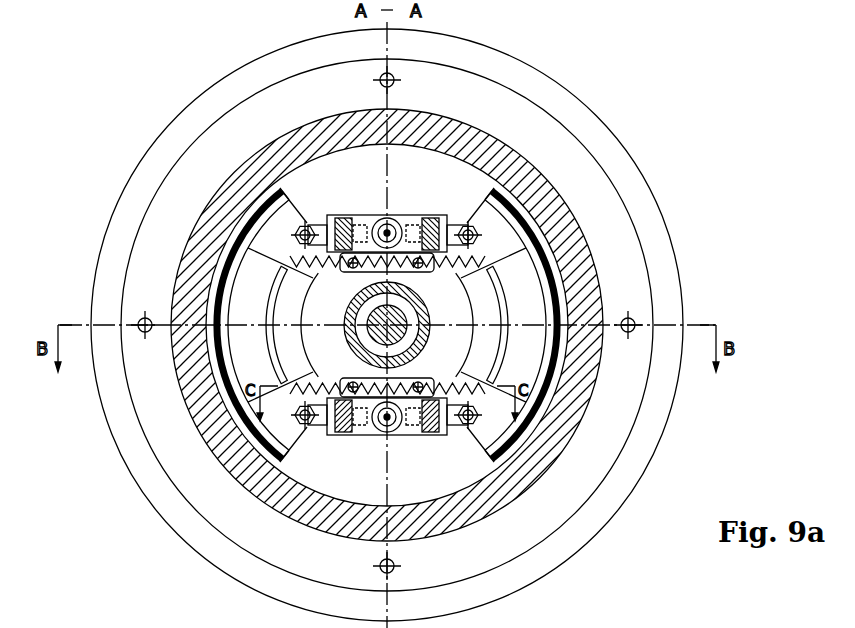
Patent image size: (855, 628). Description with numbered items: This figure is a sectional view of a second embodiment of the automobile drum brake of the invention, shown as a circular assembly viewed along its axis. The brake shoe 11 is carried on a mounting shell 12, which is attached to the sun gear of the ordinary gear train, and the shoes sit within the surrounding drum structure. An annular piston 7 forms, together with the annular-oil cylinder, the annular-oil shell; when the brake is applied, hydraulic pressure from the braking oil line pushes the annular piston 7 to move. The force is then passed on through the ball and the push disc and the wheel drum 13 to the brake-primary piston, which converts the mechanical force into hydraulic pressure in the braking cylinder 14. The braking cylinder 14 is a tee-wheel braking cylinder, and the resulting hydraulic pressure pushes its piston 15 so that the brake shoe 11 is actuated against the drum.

The annular piston 7 is at (547, 210).
The brake shoe 11 is at (528, 352).
The mounting shell 12 is at (698, 608).
The wheel drum 13 is at (698, 572).
The braking cylinder 14 is at (445, 422).
The piston 15 is at (425, 428).